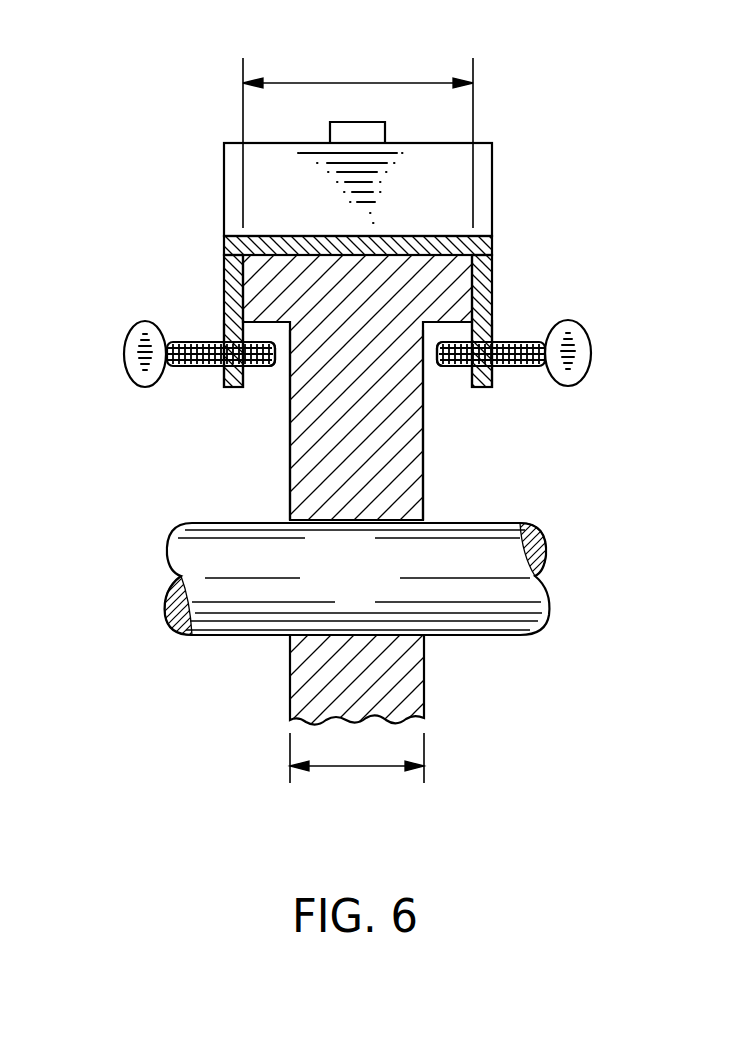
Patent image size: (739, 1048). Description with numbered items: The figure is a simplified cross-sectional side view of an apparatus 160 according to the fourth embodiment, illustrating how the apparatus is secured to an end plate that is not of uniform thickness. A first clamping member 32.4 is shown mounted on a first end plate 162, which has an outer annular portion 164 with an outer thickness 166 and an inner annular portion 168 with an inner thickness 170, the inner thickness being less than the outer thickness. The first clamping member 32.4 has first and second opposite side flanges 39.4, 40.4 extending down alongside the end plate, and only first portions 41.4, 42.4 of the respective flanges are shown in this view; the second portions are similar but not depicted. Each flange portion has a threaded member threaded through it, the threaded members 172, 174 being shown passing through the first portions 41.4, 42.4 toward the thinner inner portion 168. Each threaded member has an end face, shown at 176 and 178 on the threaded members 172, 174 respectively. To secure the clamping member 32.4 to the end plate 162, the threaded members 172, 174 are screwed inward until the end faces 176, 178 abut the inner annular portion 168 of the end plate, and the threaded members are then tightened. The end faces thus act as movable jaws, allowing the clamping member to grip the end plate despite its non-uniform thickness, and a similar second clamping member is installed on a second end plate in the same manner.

The apparatus 160 is at (516, 187).
The outer thickness 166 is at (359, 81).
The first clamping member 32.4 is at (493, 242).
The first side flange 39.4 is at (213, 262).
The first portion of first flange 41.4 is at (223, 318).
The second side flange 40.4 is at (502, 258).
The first portion of second flange 42.4 is at (495, 317).
The outer annular portion 164 is at (447, 288).
The inner annular portion 168 is at (425, 447).
The first end plate 162 is at (436, 481).
The threaded member 172 is at (126, 347).
The threaded member 174 is at (582, 352).
The end face 176 is at (277, 359).
The end face 178 is at (437, 358).
The inner thickness 170 is at (357, 770).